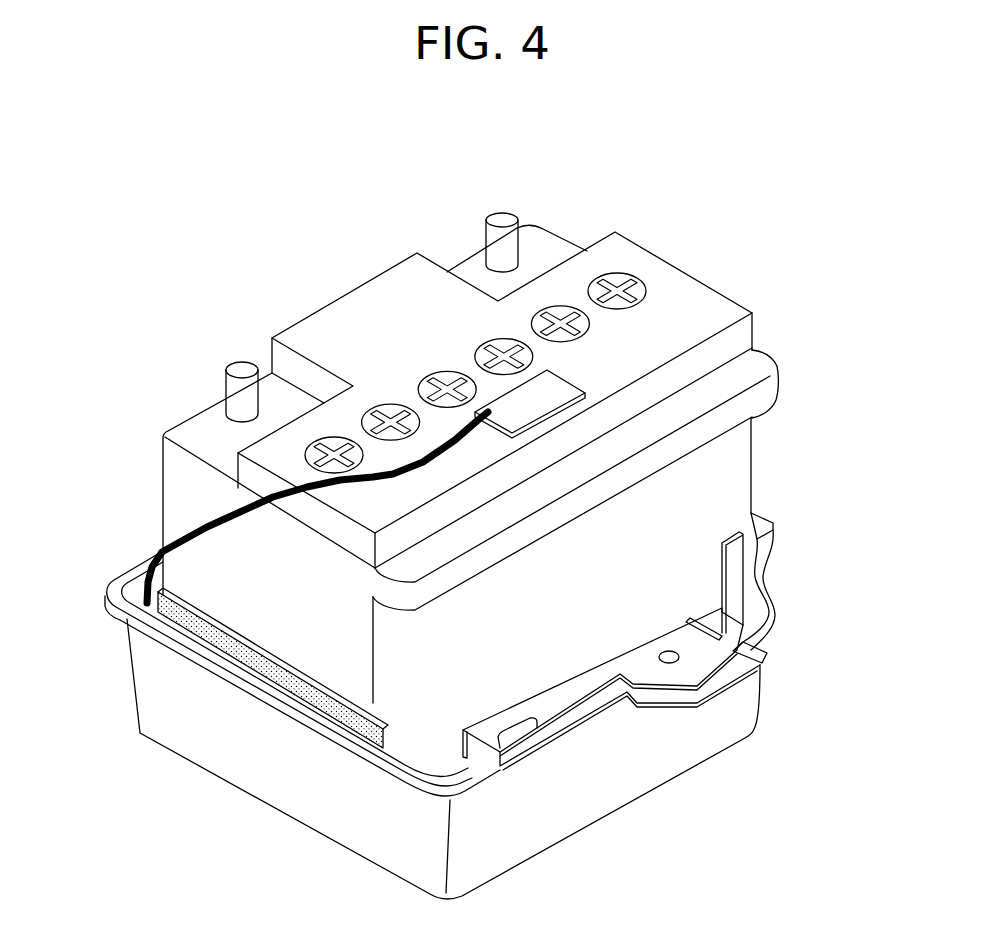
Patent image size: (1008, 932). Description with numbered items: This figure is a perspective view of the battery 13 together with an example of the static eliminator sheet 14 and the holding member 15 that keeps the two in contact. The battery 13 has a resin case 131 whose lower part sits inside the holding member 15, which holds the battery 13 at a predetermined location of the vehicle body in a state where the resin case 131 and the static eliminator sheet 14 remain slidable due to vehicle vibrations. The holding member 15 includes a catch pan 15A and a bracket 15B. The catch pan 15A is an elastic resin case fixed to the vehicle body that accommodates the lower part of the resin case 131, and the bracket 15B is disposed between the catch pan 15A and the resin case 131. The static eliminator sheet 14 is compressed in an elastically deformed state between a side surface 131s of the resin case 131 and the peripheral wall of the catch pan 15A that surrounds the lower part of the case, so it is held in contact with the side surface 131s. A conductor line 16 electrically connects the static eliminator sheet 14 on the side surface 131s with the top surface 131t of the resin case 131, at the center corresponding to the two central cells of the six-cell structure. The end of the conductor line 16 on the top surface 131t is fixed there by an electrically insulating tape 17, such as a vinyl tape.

The battery 13 is at (410, 434).
The resin case 131 is at (410, 457).
The top surface 131t is at (692, 308).
The side surface 131s is at (190, 507).
The static eliminator sheet 14 is at (270, 671).
The holding member 15 is at (440, 706).
The catch pan 15A is at (277, 750).
The bracket 15B is at (640, 657).
The conductor line 16 is at (206, 537).
The electrically insulating tape 17 is at (552, 390).